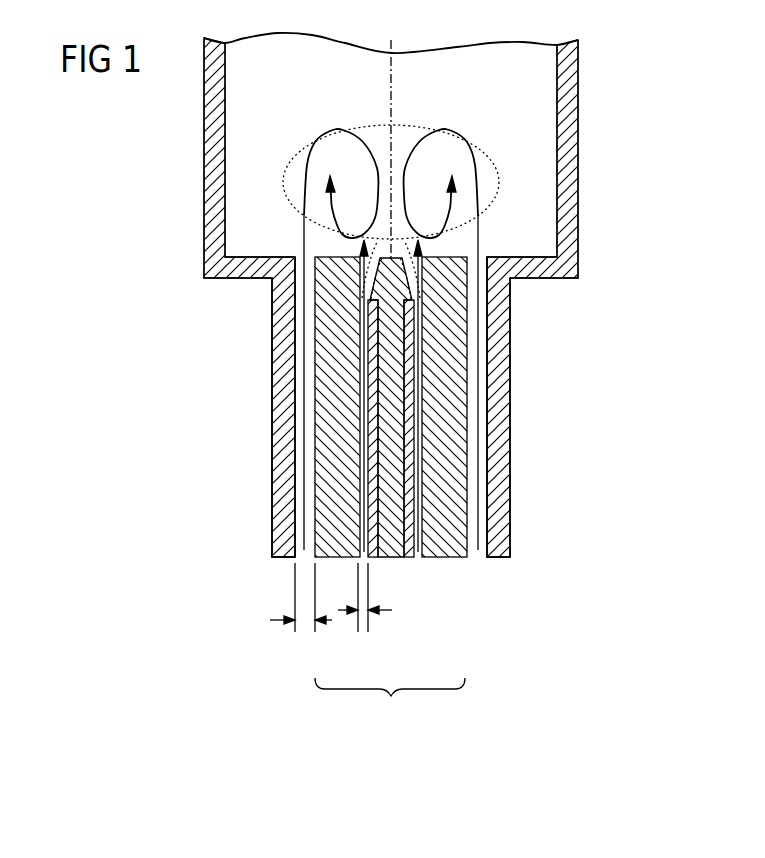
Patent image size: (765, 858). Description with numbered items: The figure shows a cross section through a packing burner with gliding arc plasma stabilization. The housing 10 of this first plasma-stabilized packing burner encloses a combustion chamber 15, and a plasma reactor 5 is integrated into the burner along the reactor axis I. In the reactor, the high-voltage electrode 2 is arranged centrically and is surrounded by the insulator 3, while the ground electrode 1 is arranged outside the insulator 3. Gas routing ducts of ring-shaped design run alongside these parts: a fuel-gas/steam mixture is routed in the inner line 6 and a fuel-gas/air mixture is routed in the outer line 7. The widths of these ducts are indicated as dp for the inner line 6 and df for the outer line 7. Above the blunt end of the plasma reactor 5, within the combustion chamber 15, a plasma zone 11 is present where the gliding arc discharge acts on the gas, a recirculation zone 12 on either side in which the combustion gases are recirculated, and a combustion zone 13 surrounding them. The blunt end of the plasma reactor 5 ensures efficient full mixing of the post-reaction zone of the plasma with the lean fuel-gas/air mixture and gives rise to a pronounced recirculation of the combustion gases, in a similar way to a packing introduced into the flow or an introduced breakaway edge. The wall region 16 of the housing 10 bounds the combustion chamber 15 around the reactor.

The ground electrode 1 is at (450, 542).
The high-voltage electrode 2 is at (395, 557).
The insulator 3 is at (413, 418).
The plasma reactor 5 is at (390, 705).
The inner line 6 is at (424, 556).
The outer line 7 is at (487, 527).
The housing 10 is at (160, 352).
The plasma zone 11 is at (412, 253).
The recirculation zone 12 is at (453, 167).
The combustion zone 13 is at (415, 126).
The combustion chamber 15 is at (328, 50).
The combustion chamber wall 16 is at (532, 268).
The reactor axis I is at (396, 50).
The width of outer duct df is at (301, 614).
The width of inner duct dp is at (365, 614).